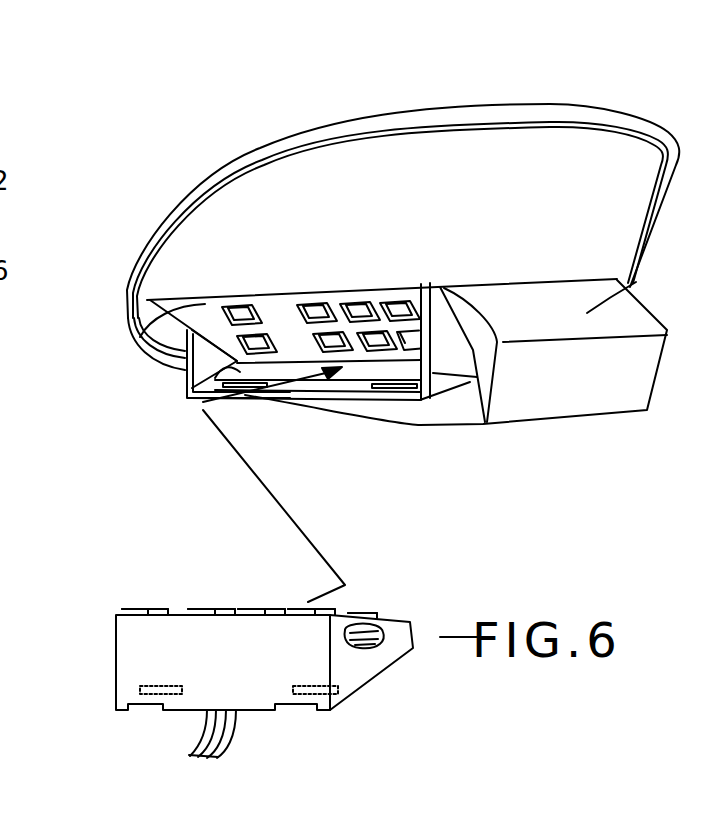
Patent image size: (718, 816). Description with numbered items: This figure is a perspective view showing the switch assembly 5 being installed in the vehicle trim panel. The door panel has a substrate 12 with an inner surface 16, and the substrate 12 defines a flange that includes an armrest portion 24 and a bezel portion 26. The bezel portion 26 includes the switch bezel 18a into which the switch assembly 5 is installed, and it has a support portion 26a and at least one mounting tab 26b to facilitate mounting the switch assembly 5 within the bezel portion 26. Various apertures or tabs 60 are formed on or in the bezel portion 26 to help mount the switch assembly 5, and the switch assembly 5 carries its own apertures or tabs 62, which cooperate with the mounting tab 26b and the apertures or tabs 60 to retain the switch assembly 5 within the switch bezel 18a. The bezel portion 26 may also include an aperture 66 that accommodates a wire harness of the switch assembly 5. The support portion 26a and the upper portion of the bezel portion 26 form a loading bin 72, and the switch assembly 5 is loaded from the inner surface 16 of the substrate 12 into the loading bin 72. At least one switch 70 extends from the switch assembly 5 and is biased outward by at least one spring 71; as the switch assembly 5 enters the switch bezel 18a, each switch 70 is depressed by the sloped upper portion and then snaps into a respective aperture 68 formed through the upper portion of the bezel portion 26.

The electronics module 5 is at (117, 667).
The substrate 12 is at (437, 150).
The inner surface 16 is at (583, 177).
The switch bezel 18a is at (452, 387).
The armrest portion 24 is at (630, 293).
The bezel portion 26 is at (140, 337).
The support portion 26a is at (477, 377).
The mounting tab 26b is at (187, 377).
The apertures or tabs 60 is at (220, 375).
The apertures or tabs 62 is at (147, 700).
The aperture 66 is at (310, 388).
The aperture 68 is at (301, 246).
The switch 70 is at (325, 602).
The spring 71 is at (380, 645).
The loading bin 72 is at (477, 332).